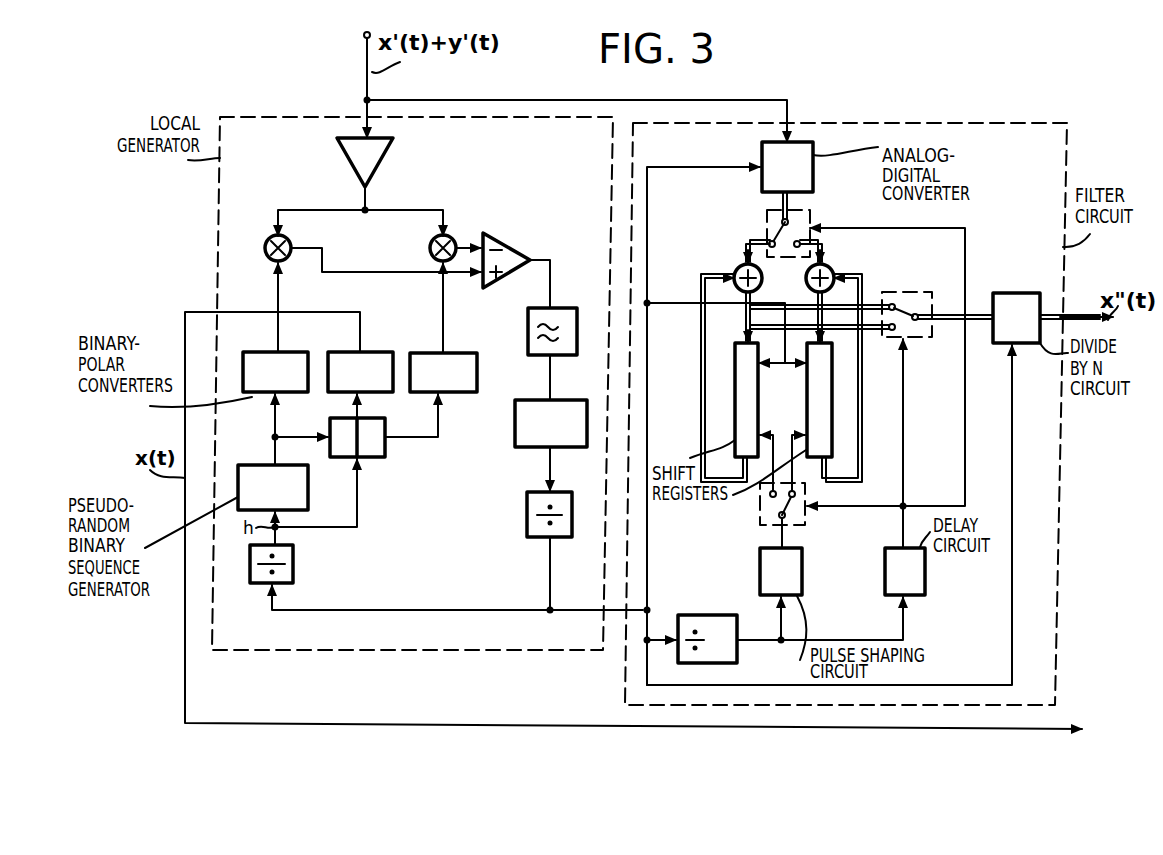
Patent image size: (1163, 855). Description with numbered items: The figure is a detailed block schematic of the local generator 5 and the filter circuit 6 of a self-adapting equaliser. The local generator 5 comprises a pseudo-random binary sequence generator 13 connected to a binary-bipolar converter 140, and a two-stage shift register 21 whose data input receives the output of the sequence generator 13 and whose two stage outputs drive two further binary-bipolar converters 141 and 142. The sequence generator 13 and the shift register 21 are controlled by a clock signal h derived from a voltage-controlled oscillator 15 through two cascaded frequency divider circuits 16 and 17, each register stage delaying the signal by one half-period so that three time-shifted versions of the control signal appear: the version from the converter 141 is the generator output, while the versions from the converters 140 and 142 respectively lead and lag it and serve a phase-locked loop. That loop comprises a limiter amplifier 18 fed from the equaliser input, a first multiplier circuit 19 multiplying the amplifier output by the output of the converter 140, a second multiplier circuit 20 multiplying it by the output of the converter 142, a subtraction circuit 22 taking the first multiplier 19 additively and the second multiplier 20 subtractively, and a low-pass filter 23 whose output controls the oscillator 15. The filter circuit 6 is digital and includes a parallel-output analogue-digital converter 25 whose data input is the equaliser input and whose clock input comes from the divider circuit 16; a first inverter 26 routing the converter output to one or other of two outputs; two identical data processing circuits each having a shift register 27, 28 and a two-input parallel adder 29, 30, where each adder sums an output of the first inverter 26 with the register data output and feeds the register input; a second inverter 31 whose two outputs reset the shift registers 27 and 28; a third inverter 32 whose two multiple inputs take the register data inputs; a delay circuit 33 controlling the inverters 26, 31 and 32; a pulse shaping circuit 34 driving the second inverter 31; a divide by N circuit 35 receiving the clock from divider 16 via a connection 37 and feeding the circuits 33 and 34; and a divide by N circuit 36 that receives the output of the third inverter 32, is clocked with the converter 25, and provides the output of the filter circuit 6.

The local generator 5 is at (258, 118).
The filter circuit 6 is at (972, 130).
The pseudo-random binary sequence generator 13 is at (264, 475).
The voltage-controlled oscillator 15 is at (522, 446).
The frequency divider circuit 16 is at (527, 510).
The frequency divider circuit 17 is at (293, 574).
The limiter amplifier 18 is at (378, 158).
The first multiplier circuit 19 is at (265, 248).
The second multiplier circuit 20 is at (430, 250).
The two-stage shift register 21 is at (372, 450).
The subtraction circuit 22 is at (510, 250).
The low-pass filter 23 is at (528, 342).
The analogue-digital converter 25 is at (800, 168).
The first inverter 26 is at (810, 218).
The shift register 27 is at (757, 381).
The shift register 28 is at (808, 410).
The two-input parallel adder 29 is at (734, 274).
The two-input parallel adder 30 is at (834, 274).
The second inverter 31 is at (760, 510).
The third inverter 32 is at (910, 292).
The delay circuit 33 is at (918, 578).
The pulse shaping circuit 34 is at (794, 578).
The divide by N circuit 35 is at (716, 615).
The divide by N circuit 36 is at (1016, 300).
The connection 37 is at (435, 608).
The binary-bipolar converter 140 is at (272, 366).
The binary-bipolar converter 141 is at (346, 366).
The binary-bipolar converter 142 is at (430, 366).